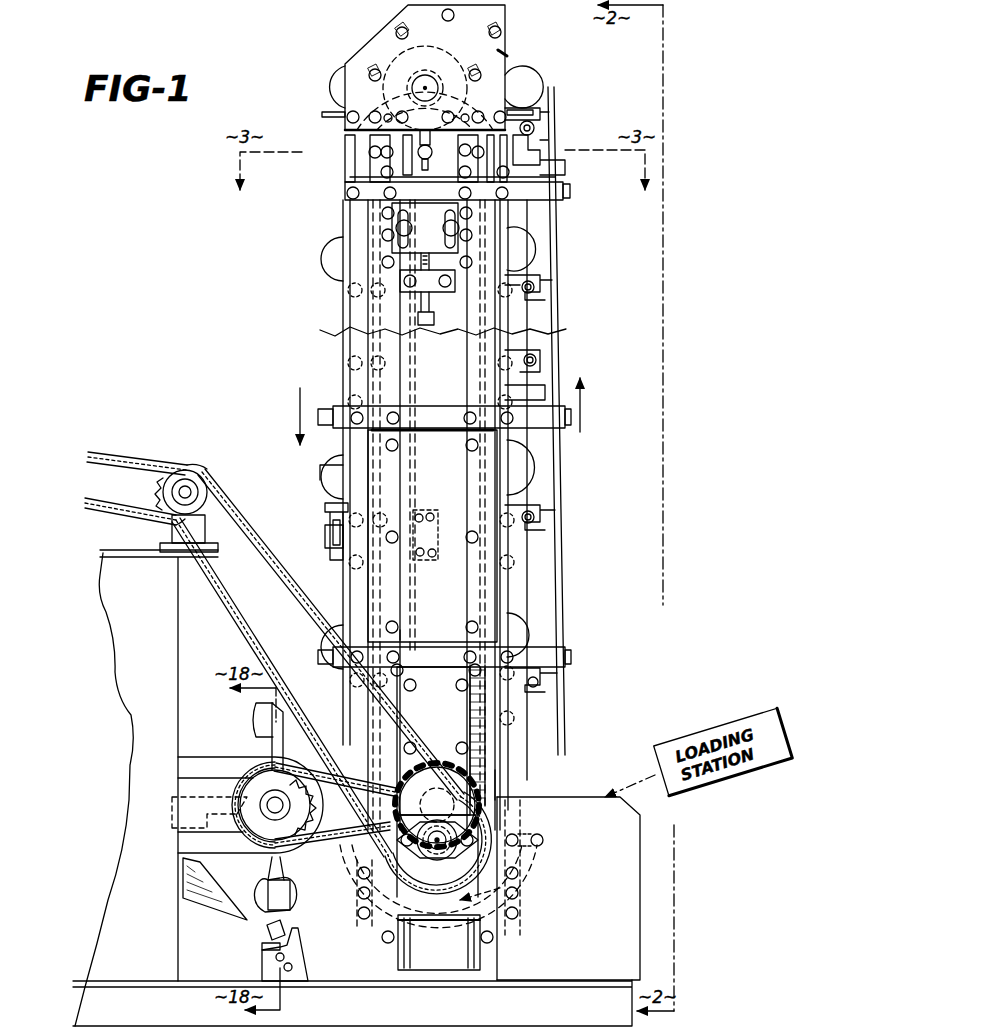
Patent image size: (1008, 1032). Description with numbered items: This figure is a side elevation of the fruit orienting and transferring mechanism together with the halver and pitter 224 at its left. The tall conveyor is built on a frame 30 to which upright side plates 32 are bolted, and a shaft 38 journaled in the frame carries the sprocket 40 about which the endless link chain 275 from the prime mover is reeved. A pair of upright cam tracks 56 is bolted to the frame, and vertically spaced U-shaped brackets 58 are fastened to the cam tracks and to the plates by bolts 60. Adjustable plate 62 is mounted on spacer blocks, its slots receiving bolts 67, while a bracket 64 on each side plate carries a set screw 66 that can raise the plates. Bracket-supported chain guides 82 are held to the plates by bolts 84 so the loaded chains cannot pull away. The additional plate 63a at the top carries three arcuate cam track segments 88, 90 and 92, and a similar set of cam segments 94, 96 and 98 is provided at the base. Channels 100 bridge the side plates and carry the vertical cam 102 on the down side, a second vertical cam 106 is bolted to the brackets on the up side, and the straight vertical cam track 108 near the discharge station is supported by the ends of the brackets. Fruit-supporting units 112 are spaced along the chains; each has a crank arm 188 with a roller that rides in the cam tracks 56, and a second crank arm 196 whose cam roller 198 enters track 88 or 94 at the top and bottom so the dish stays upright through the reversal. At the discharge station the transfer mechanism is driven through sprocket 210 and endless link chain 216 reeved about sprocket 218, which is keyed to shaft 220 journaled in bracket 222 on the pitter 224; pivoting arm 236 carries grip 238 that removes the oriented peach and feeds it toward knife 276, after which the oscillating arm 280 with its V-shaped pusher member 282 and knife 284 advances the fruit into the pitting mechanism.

The arcuate cam track segment 88 is at (489, 27).
The arcuate cam track segment 90 is at (490, 90).
The additional plate 63a is at (505, 54).
The arcuate cam track segment 92 is at (336, 85).
The fruit-supporting unit 112 is at (540, 110).
The cam roller 198 is at (534, 129).
The bolts 60 is at (393, 190).
The U-shaped brackets 58 is at (560, 192).
The plate 62 is at (392, 206).
The bolts 67 is at (441, 228).
The set screw 66 is at (428, 311).
The bracket 64 is at (422, 282).
The crank arm 196 is at (540, 364).
The crank arm 188 is at (520, 398).
The bolts 84 is at (470, 450).
The upright cam tracks 56 is at (513, 450).
The upright side plates 32 is at (440, 496).
The straight vertical cam track 108 is at (330, 503).
The endless link chain 275 is at (248, 520).
The channels 100 is at (430, 562).
The chain guides 82 is at (470, 606).
The vertical cam 102 is at (410, 626).
The second vertical cam 106 is at (562, 600).
The pitter 224 is at (104, 592).
The bracket 222 is at (195, 762).
The arm 236 is at (268, 737).
The sprocket 218 is at (259, 790).
The shaft 220 is at (274, 812).
The endless link chain 216 is at (320, 845).
The knife 276 is at (185, 889).
The grip 238 is at (293, 894).
The knife 284 is at (266, 929).
The V-shaped pusher member 282 is at (262, 947).
The oscillating arm 280 is at (298, 975).
The frame 30 is at (446, 728).
The sprocket 40 is at (432, 797).
The sprocket 210 is at (500, 792).
The shaft 38 is at (437, 846).
The cam segment 94 is at (520, 891).
The cam segment 96 is at (506, 934).
The cam segment 98 is at (370, 924).